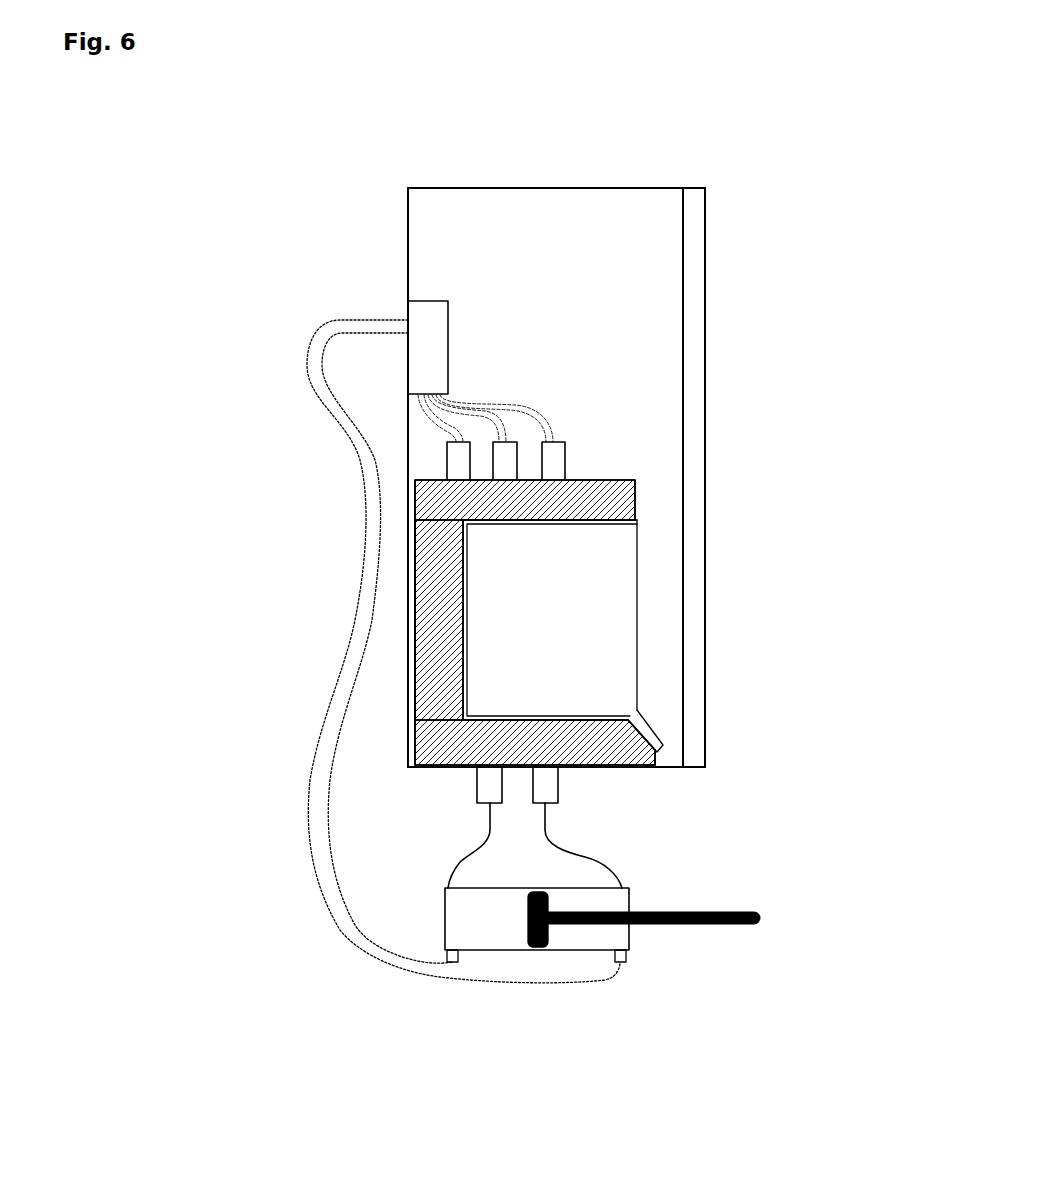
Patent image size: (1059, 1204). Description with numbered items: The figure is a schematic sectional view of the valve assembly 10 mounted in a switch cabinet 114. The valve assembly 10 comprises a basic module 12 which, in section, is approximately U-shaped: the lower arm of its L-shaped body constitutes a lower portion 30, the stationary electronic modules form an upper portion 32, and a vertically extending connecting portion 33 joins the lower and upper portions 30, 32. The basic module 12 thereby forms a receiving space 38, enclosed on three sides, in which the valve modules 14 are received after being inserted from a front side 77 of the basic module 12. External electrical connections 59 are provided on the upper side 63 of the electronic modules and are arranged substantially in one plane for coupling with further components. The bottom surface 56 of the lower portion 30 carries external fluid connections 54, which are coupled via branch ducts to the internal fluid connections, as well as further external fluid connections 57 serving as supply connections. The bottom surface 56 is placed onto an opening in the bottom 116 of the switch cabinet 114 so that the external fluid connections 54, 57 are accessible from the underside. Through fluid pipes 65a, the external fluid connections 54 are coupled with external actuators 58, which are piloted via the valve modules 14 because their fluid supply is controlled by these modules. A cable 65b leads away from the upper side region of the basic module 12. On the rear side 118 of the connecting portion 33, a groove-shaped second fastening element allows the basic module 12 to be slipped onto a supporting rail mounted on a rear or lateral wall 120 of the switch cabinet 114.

The switch cabinet 114 is at (396, 197).
The valve assembly 10 is at (676, 542).
The rear or lateral wall 120 is at (408, 719).
The upper side 63 is at (437, 478).
The external electrical connections 59 is at (557, 456).
The basic module 12 is at (654, 487).
The upper portion 32 is at (598, 497).
The connecting portion 33 is at (437, 545).
The lower portion 30 is at (585, 735).
The rear side 118 is at (415, 602).
The valve modules 14 is at (620, 598).
The receiving space 38 is at (449, 659).
The front side 77 is at (667, 638).
The bottom 116 is at (593, 768).
The bottom surface 56 is at (633, 767).
The external fluid connections 54 is at (480, 792).
The further external fluid connections 57 is at (392, 786).
The fluid pipes 65a is at (462, 855).
The external actuators 58 is at (653, 889).
The electrical cable 65b is at (312, 366).